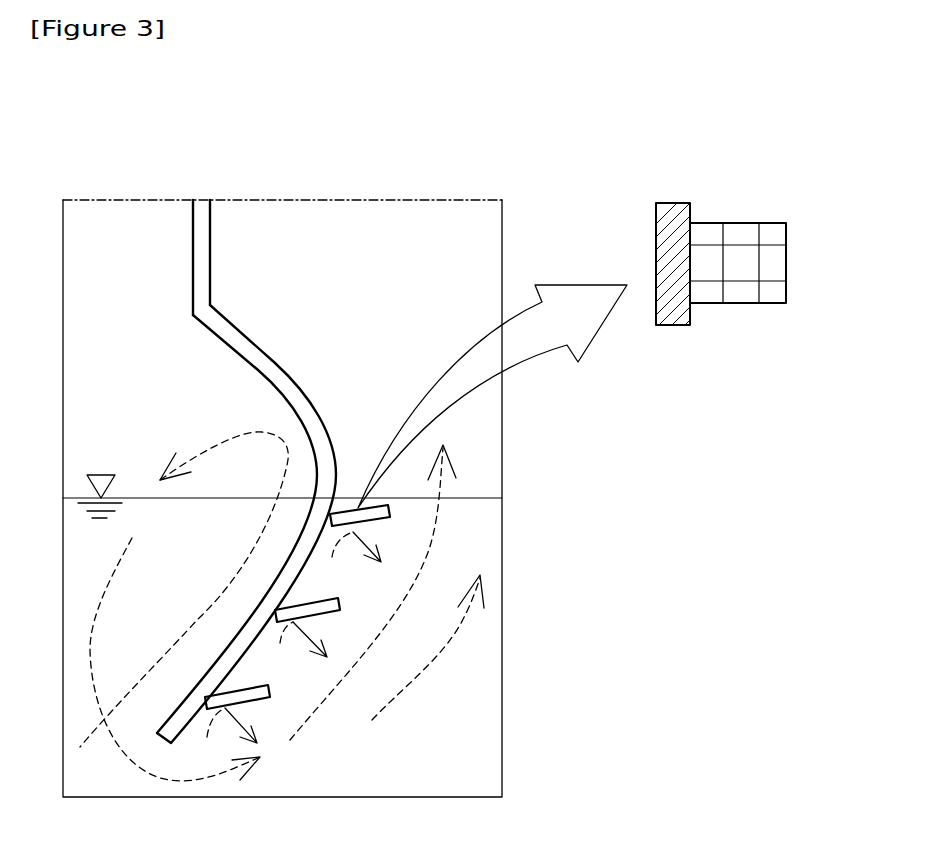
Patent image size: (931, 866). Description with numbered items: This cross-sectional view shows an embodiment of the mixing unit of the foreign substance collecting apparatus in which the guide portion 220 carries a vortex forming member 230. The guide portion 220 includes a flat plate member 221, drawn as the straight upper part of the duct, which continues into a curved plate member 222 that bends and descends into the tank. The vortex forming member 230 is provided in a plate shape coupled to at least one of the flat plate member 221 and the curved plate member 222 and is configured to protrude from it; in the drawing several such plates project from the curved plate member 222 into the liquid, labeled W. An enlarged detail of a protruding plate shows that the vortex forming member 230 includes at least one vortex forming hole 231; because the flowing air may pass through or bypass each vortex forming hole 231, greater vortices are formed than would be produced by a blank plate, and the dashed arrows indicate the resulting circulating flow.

The guide portion 220 is at (428, 418).
The flat plate member 221 is at (207, 260).
The curved plate member 222 is at (267, 357).
The vortex forming member 230 is at (265, 702).
The vortex forming hole 231 is at (747, 262).
The water W is at (473, 686).